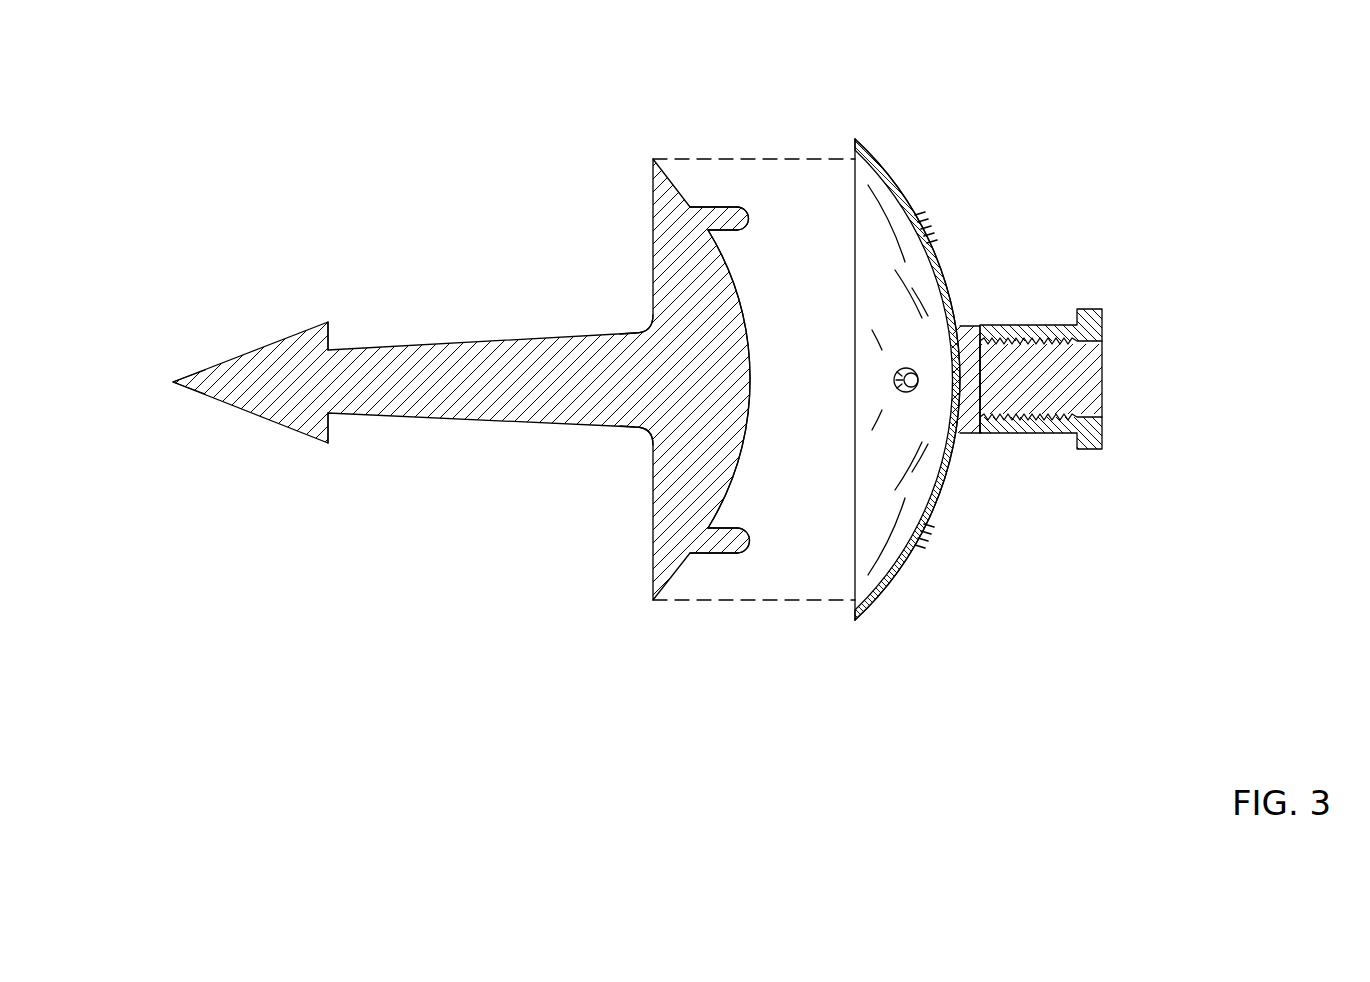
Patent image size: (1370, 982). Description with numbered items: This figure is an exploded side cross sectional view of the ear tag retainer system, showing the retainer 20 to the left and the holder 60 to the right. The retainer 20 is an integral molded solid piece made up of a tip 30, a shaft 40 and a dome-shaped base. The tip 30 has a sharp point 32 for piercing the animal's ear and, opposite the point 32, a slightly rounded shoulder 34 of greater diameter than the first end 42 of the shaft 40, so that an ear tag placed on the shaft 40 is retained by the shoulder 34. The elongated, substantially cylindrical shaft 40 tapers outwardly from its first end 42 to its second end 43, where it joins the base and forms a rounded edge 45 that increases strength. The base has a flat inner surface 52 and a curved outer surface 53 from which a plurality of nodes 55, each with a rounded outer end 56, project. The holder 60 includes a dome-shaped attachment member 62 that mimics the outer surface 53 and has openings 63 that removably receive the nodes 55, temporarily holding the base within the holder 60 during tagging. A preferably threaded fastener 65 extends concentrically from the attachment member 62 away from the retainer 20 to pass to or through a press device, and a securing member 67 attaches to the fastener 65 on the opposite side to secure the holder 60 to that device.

The retainer 20 is at (505, 620).
The tip 30 is at (205, 402).
The point 32 is at (176, 381).
The shoulder 34 is at (328, 322).
The shaft 40 is at (478, 328).
The first end 42 is at (340, 415).
The second end 43 is at (627, 443).
The rounded edge 45 is at (645, 325).
The inner surface 52 is at (652, 215).
The outer surface 53 is at (752, 378).
The nodes 55 is at (720, 207).
The rounded outer end 56 is at (755, 218).
The holder 60 is at (899, 593).
The attachment member 62 is at (872, 160).
The openings 63 is at (930, 225).
The fastener 65 is at (1105, 380).
The securing member 67 is at (1040, 325).